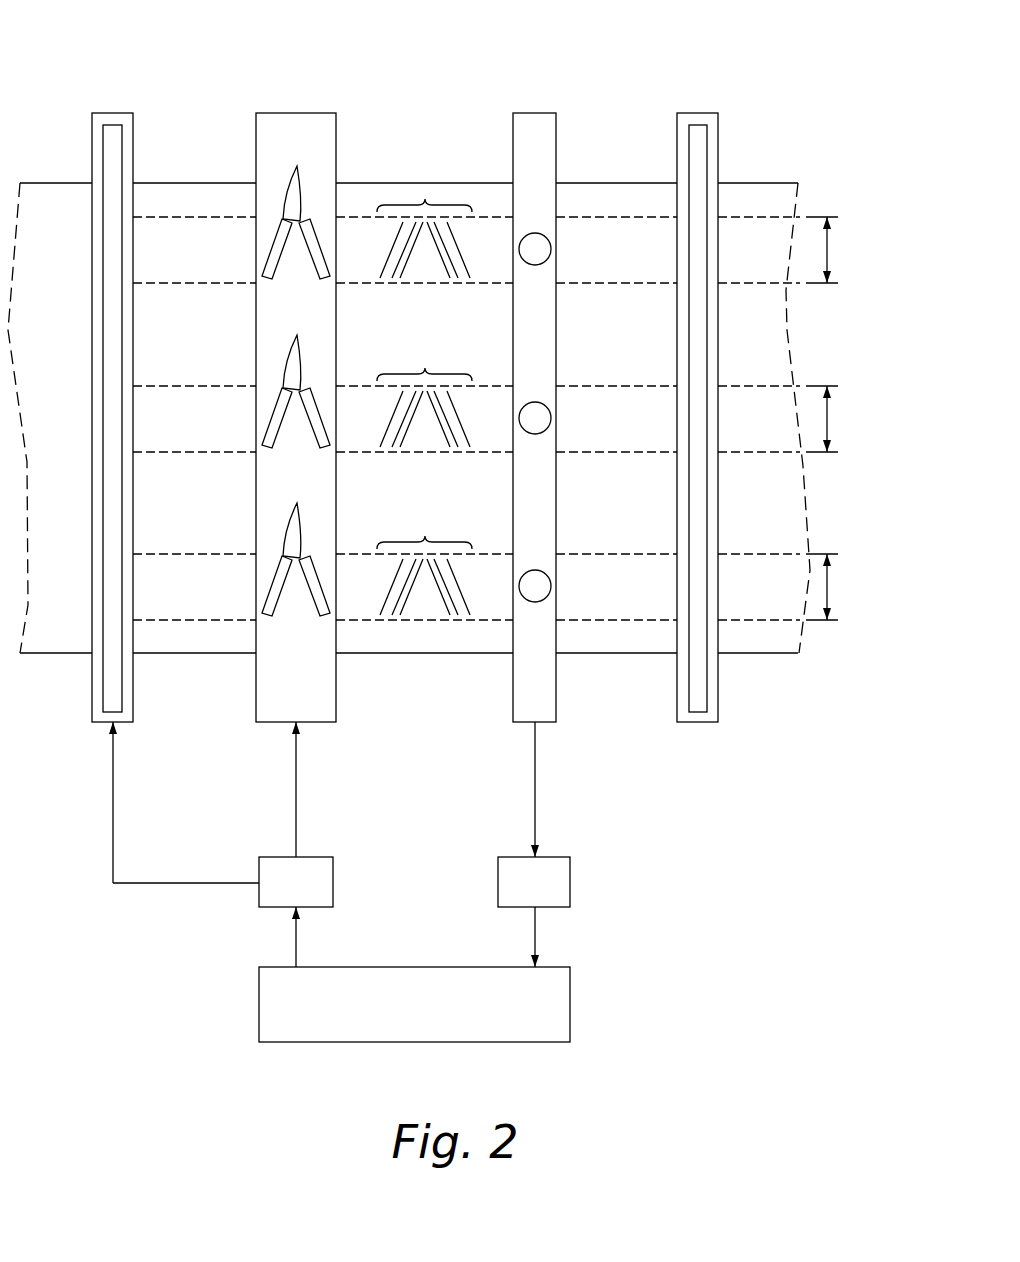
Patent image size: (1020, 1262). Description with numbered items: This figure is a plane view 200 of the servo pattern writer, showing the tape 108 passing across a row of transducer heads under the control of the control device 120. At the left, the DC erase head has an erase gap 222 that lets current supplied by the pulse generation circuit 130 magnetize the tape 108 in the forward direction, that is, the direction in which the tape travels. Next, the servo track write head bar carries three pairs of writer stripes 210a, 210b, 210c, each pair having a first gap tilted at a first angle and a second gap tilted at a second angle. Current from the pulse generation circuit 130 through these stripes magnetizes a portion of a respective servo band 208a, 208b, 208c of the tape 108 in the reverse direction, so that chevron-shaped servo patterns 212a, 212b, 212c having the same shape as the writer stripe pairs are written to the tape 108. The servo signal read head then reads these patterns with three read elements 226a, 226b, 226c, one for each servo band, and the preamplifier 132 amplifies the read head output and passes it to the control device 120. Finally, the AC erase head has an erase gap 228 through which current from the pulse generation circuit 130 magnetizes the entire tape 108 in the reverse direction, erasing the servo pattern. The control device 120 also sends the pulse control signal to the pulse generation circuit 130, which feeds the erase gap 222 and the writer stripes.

The slicing system 200 is at (115, 42).
The tape 108 is at (80, 432).
The erase gap 222 is at (114, 156).
The pair of writer stripes 210a is at (296, 210).
The pair of writer stripes 210b is at (296, 379).
The pair of writer stripes 210c is at (296, 547).
The spray nozzle 212a is at (425, 199).
The spray nozzle 212b is at (424, 378).
The spray nozzle 212c is at (424, 546).
The read element 226a is at (540, 156).
The read element 226b is at (540, 419).
The read element 226c is at (540, 587).
The erase gap 228 is at (698, 156).
The servo band 208a is at (830, 252).
The servo band 208b is at (830, 421).
The servo band 208c is at (830, 589).
The pulse generation circuit 130 is at (277, 893).
The preamplifier 132 is at (515, 893).
The control device 120 is at (395, 1014).